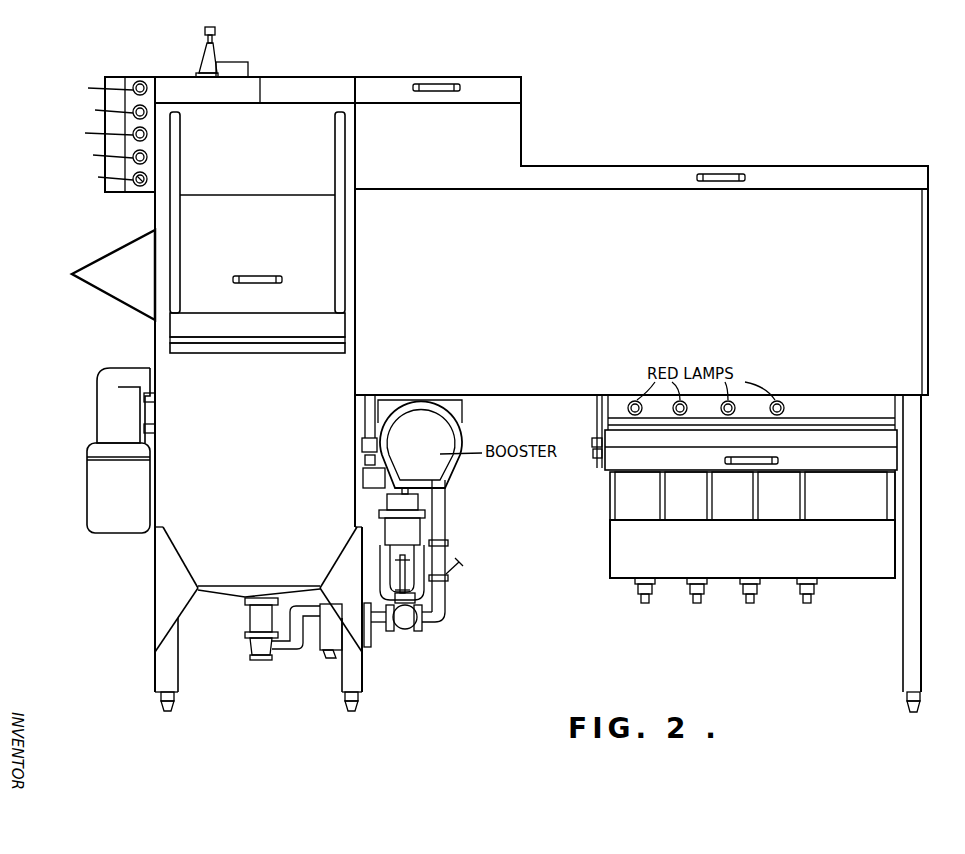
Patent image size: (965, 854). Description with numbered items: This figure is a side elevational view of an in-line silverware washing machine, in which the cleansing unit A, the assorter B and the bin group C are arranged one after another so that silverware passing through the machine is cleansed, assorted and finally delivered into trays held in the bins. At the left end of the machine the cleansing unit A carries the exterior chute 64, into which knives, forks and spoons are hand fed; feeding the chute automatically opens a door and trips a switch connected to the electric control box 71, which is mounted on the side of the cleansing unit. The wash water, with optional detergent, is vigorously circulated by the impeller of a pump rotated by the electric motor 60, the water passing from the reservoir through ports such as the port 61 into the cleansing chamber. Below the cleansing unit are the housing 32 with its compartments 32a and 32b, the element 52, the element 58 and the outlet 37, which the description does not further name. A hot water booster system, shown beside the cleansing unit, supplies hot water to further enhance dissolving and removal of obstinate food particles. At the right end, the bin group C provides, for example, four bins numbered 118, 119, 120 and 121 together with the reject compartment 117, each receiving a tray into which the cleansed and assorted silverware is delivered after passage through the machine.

The cleansing unit A is at (172, 70).
The assorter B is at (663, 160).
The bin group C is at (607, 548).
The electric control box 71 is at (106, 77).
The hopper 32 is at (268, 478).
The upper hopper compartment 32a is at (282, 164).
The lower hopper compartment 32b is at (283, 251).
The exterior chute 64 is at (140, 285).
The port 61 is at (128, 370).
The duct 58 is at (107, 403).
The bracket 52 is at (147, 413).
The electric motor 60 is at (105, 493).
The discharge spout 37 is at (262, 618).
The reject compartment 117 is at (857, 507).
The bin group 118 is at (651, 507).
The bin group 119 is at (697, 507).
The bin group 120 is at (746, 507).
The bin group 121 is at (789, 507).